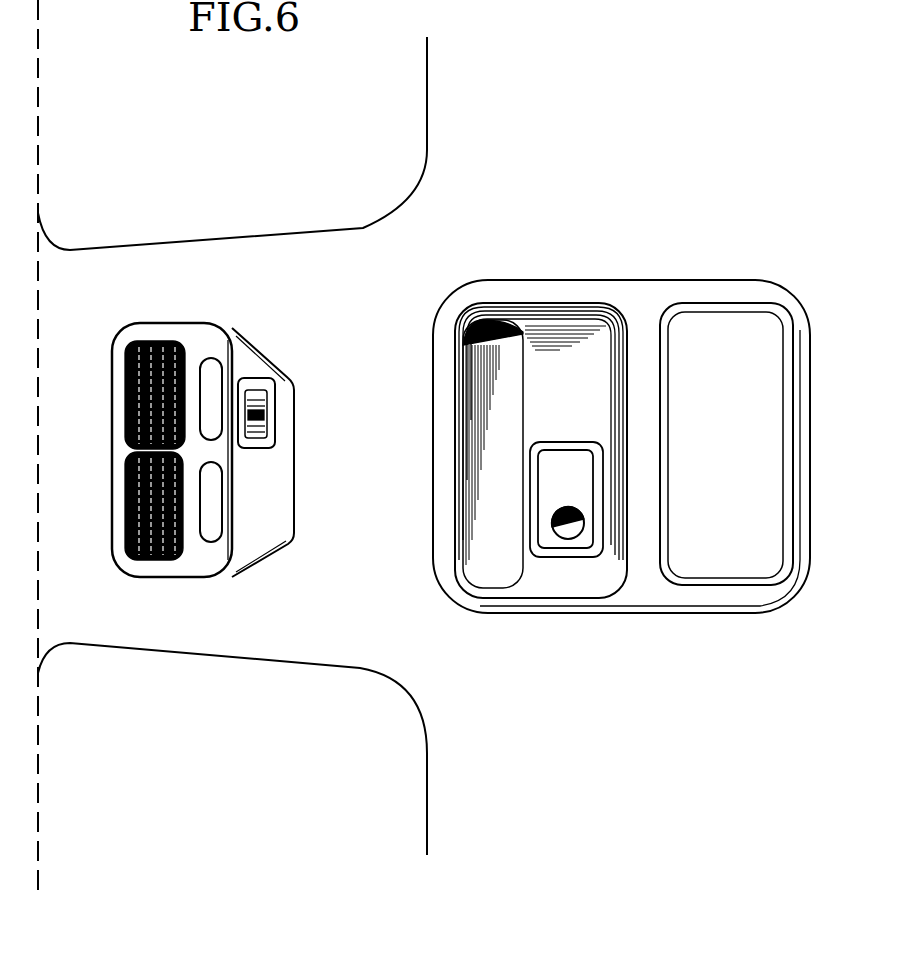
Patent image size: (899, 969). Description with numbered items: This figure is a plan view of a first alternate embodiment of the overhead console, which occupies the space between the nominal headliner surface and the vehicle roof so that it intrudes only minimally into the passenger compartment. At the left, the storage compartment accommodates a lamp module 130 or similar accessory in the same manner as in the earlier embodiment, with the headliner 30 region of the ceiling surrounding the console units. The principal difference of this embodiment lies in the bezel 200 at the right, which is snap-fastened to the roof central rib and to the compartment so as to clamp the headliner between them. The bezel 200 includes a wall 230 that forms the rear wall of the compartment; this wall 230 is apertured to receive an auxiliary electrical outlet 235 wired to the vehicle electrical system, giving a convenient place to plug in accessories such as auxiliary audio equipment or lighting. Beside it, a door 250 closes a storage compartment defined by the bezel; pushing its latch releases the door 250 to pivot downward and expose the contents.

The vehicle headliner / roof area 30 is at (382, 458).
The lamp module 130 is at (270, 482).
The bezel 200 is at (621, 403).
The wall 230 is at (568, 375).
The auxiliary electrical outlet 235 is at (556, 530).
The door 250 is at (748, 450).